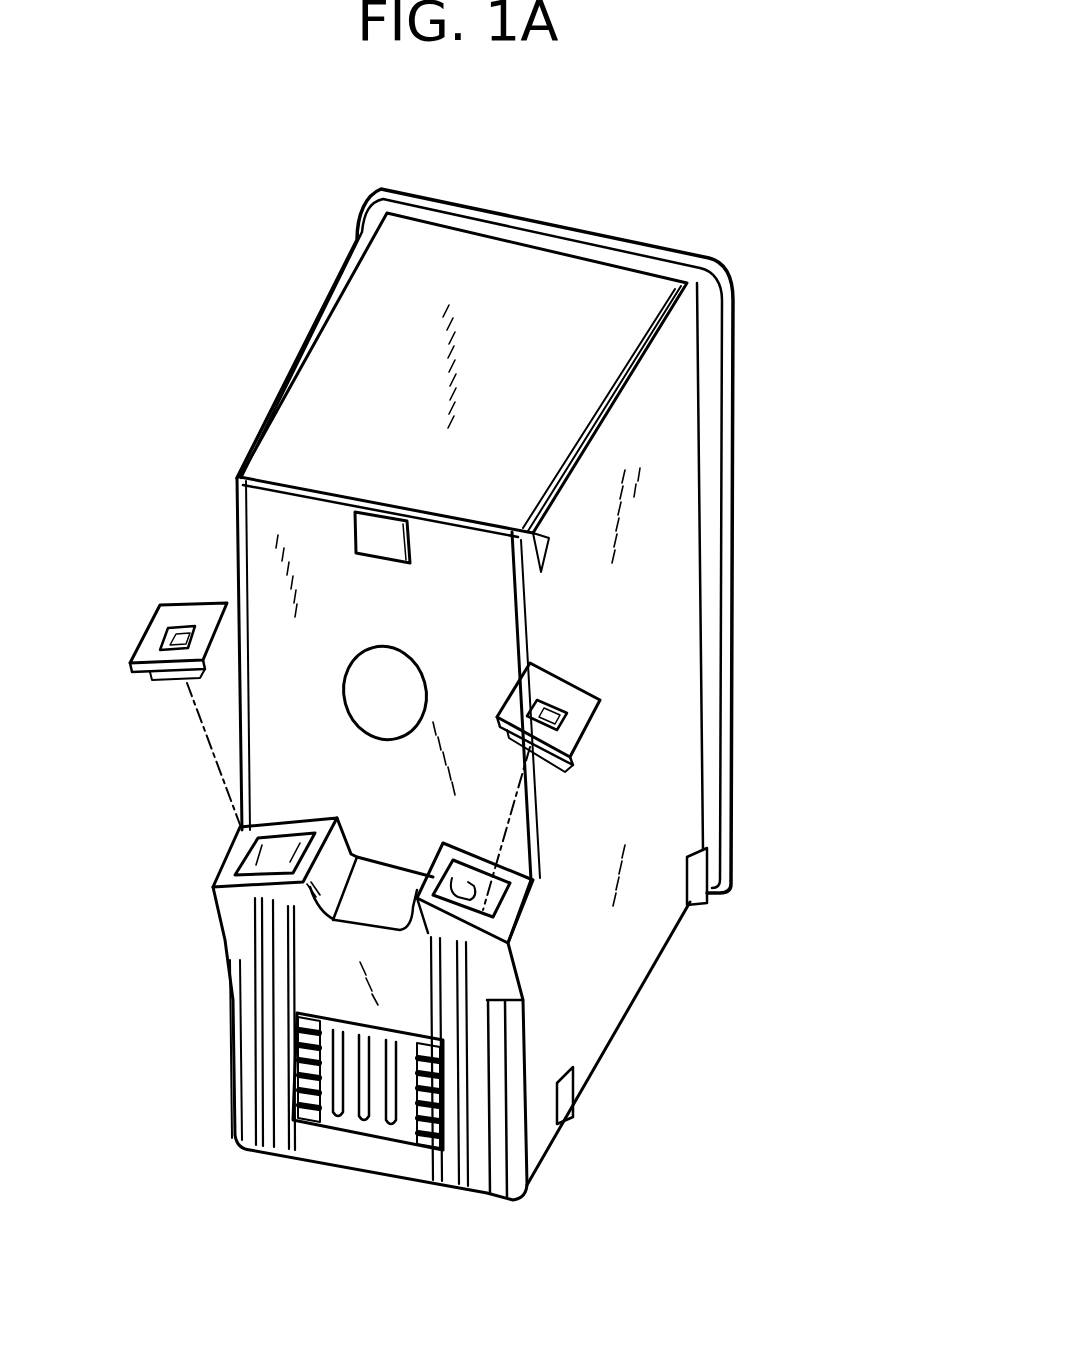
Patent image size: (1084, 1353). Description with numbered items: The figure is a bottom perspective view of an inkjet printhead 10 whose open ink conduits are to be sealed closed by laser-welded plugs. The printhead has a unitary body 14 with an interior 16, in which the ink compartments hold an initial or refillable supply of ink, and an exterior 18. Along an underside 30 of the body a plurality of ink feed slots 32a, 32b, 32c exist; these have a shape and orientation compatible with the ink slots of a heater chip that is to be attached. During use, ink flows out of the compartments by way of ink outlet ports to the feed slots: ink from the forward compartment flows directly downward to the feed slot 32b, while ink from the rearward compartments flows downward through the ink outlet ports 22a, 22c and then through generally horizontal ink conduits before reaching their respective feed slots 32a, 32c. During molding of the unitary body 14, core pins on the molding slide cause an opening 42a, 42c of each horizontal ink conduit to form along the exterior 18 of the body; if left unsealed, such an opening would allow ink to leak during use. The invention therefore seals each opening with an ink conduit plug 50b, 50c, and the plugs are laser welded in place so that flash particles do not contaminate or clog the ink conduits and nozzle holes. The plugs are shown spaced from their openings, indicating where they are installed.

The inkjet printhead 10 is at (773, 319).
The unitary body 14 is at (512, 275).
The interior 16 is at (428, 185).
The exterior 18 is at (541, 372).
The ink outlet port 22a is at (293, 857).
The ink outlet port 22c is at (470, 884).
The underside 30 is at (327, 967).
The ink feed slot 32a is at (335, 1118).
The ink feed slot 32b is at (363, 1118).
The ink feed slot 32c is at (390, 1122).
The opening 42a is at (250, 857).
The opening 42c is at (507, 880).
The ink conduit plug 50b is at (580, 697).
The ink conduit plug 50c is at (157, 620).